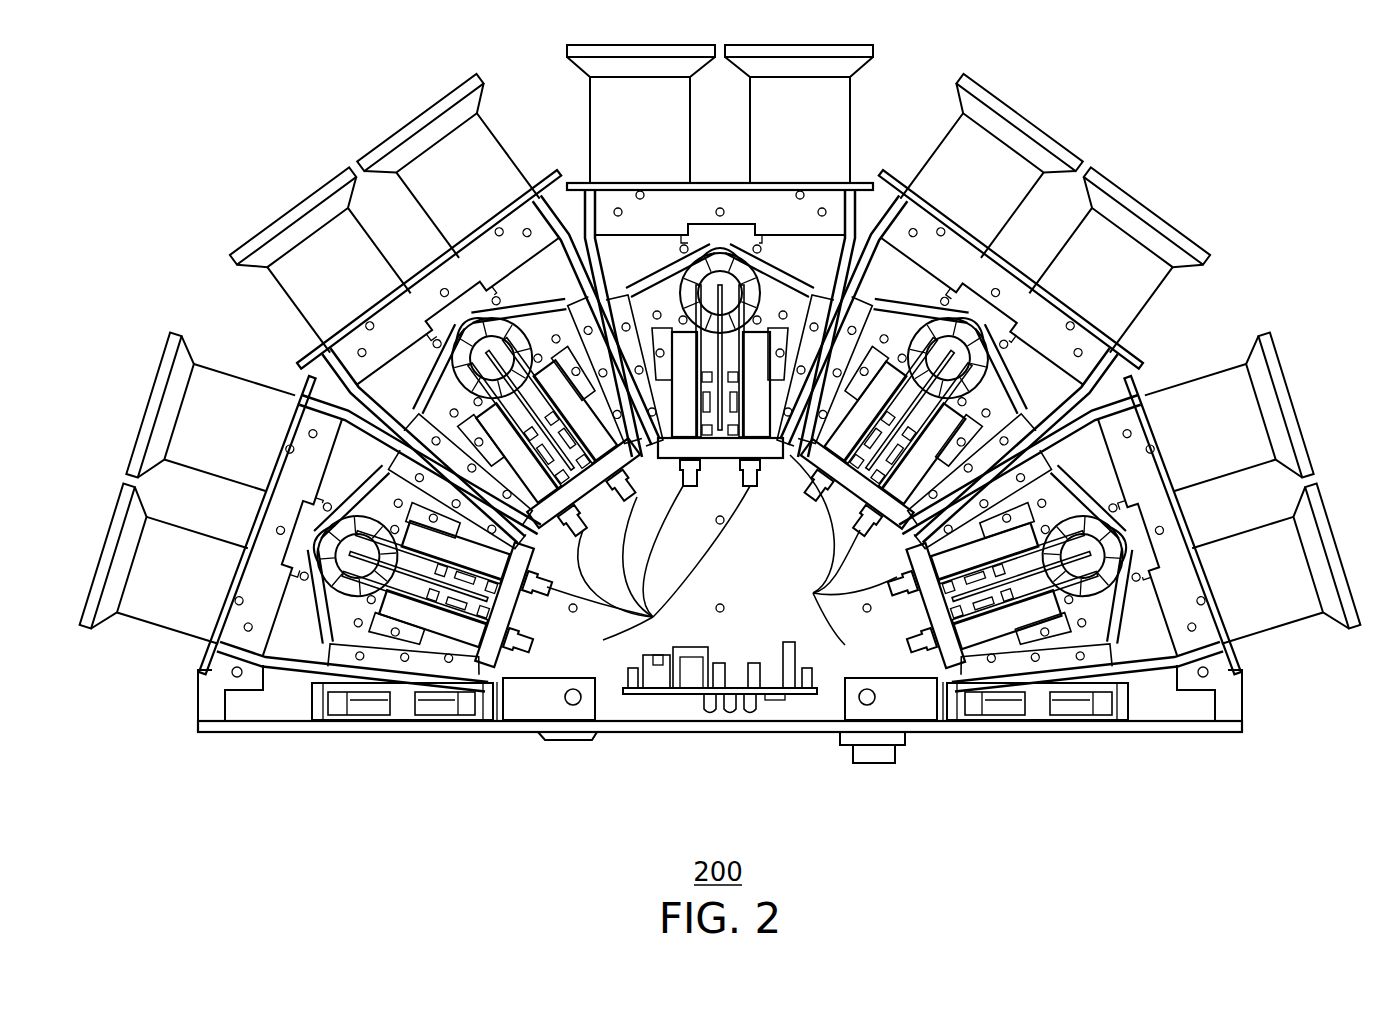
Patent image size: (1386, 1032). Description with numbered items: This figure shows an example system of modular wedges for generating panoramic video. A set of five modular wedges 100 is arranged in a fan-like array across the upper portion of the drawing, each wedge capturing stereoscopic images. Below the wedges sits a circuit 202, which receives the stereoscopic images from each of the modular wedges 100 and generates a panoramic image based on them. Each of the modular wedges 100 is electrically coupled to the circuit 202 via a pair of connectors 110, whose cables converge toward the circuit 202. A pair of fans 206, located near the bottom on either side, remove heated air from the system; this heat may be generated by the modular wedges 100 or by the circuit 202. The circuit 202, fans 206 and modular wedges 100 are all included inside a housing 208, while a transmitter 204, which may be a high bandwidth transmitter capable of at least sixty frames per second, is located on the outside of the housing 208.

The modular wedge 100 is at (670, 206).
The connectors 110 is at (722, 550).
The circuit 202 is at (716, 690).
The transmitter 204 is at (870, 765).
The fans 206 is at (400, 706).
The housing 208 is at (762, 733).